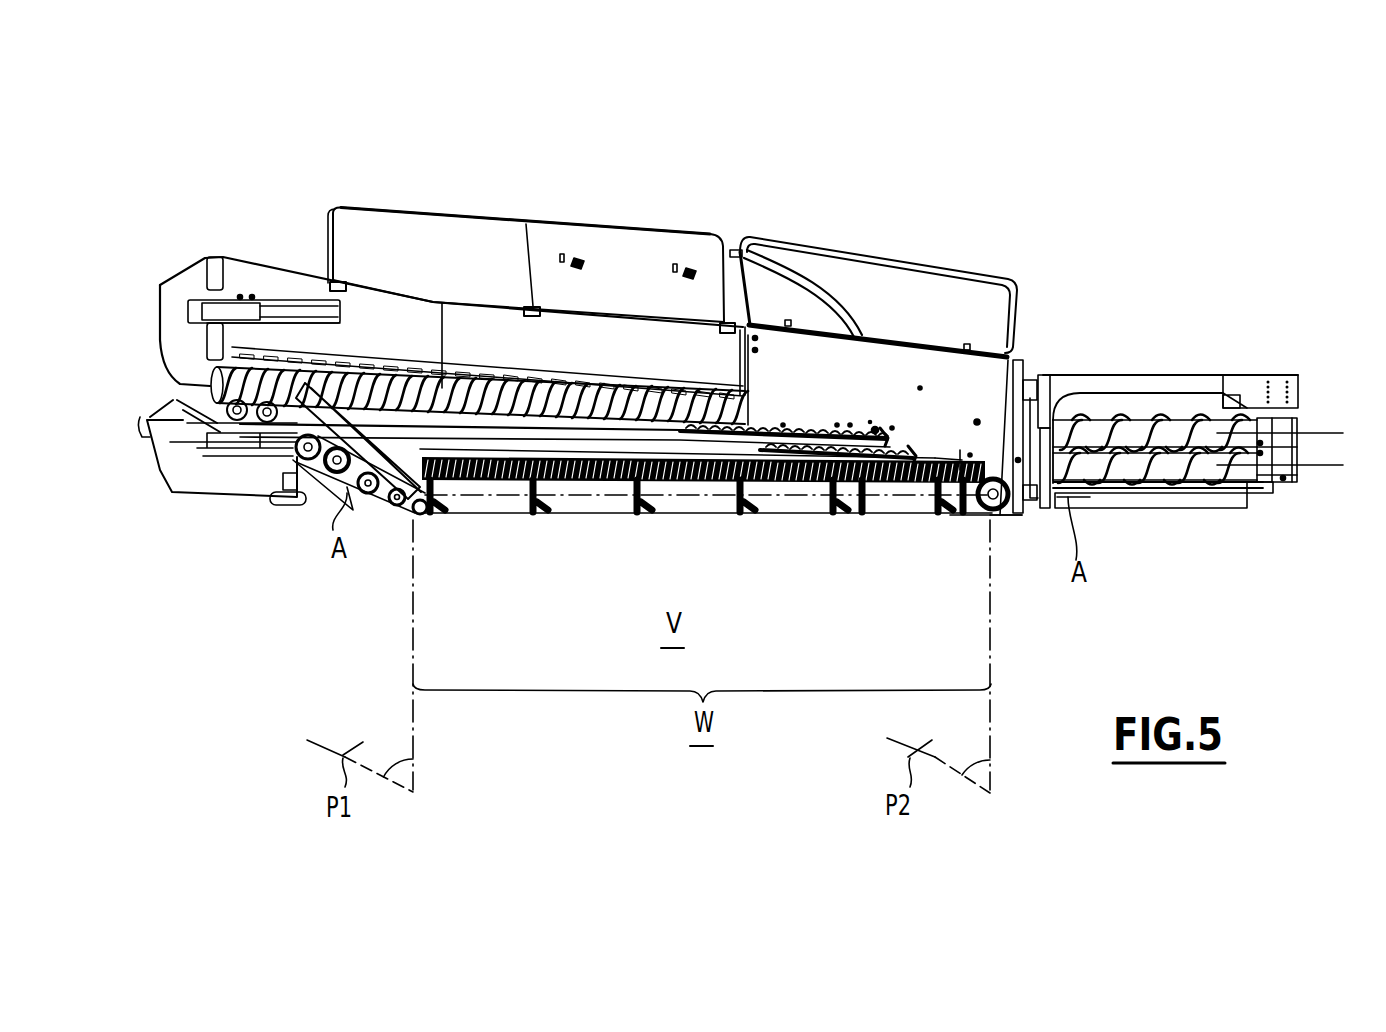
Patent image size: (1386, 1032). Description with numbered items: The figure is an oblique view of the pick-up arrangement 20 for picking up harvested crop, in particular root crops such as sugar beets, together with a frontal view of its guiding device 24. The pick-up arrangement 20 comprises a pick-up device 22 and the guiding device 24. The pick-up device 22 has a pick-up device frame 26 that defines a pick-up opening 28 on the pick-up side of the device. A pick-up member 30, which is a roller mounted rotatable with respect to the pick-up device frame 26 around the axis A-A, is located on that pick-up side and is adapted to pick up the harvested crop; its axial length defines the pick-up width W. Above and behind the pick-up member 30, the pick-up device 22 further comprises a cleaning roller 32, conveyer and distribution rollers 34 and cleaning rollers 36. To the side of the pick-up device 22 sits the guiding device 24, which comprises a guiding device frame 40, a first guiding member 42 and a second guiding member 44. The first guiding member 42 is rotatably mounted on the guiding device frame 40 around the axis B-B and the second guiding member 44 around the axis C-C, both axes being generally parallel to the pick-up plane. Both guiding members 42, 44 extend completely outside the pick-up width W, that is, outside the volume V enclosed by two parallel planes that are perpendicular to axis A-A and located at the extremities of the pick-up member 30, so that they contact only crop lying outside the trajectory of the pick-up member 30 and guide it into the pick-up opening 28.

The pick-up arrangement 20 is at (878, 147).
The pick-up device 22 is at (599, 218).
The guiding device 24 is at (1108, 357).
The pick-up device frame 26 is at (977, 373).
The pick-up opening 28 is at (480, 530).
The pick-up member 30 is at (593, 498).
The cleaning roller 32 is at (965, 456).
The conveyer and distribution rollers 34 is at (790, 437).
The cleaning rollers 36 is at (400, 388).
The guiding device frame 40 is at (1208, 382).
The first guiding member 42 is at (1173, 465).
The second guiding member 44 is at (1135, 430).